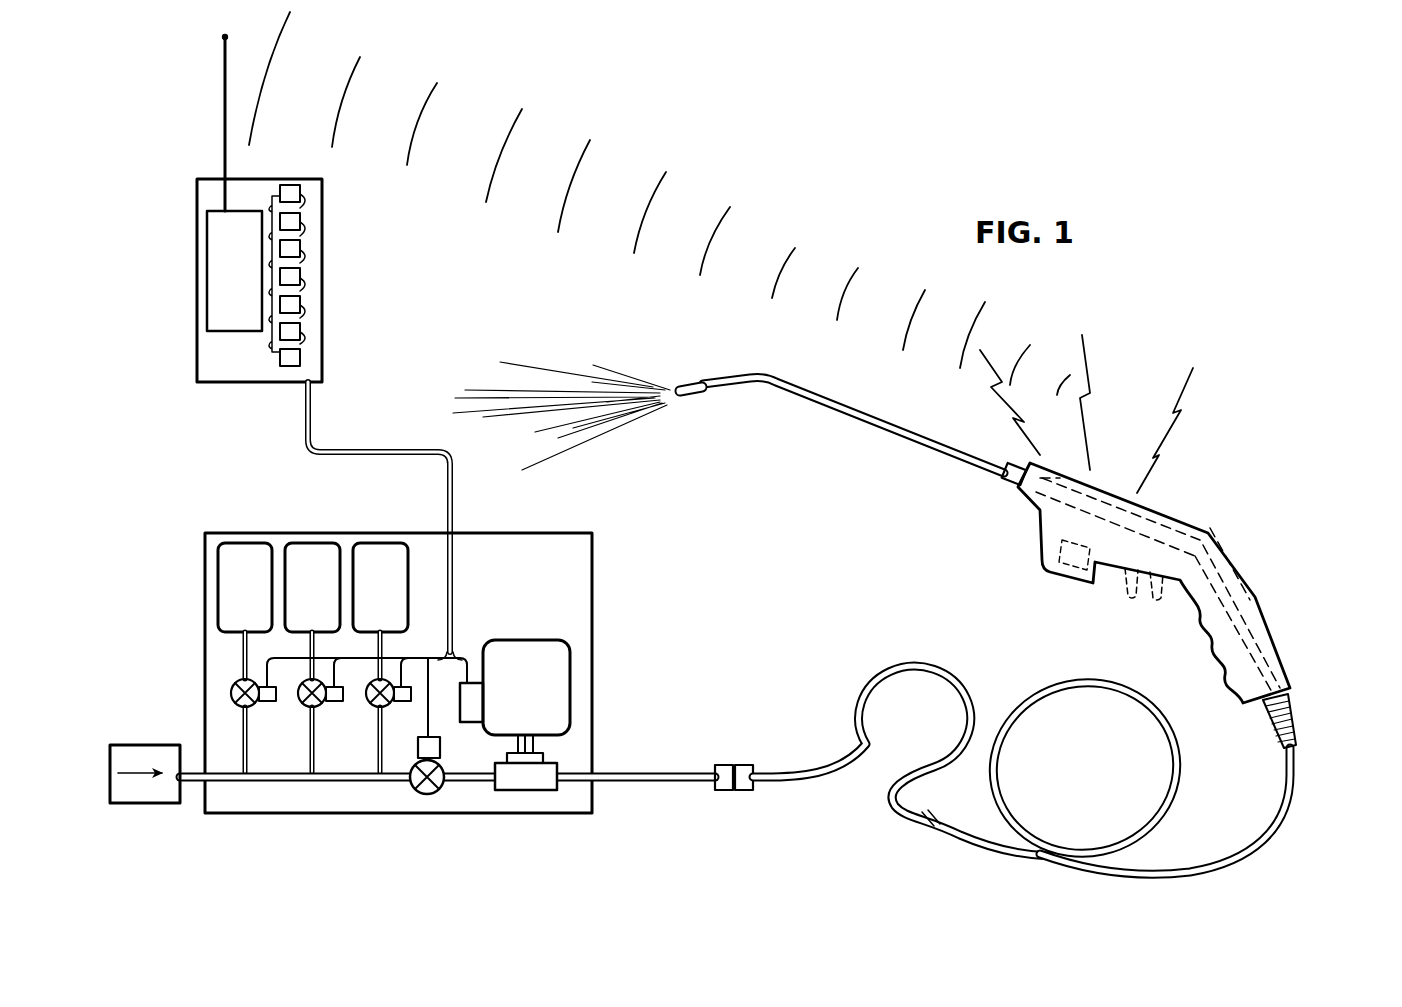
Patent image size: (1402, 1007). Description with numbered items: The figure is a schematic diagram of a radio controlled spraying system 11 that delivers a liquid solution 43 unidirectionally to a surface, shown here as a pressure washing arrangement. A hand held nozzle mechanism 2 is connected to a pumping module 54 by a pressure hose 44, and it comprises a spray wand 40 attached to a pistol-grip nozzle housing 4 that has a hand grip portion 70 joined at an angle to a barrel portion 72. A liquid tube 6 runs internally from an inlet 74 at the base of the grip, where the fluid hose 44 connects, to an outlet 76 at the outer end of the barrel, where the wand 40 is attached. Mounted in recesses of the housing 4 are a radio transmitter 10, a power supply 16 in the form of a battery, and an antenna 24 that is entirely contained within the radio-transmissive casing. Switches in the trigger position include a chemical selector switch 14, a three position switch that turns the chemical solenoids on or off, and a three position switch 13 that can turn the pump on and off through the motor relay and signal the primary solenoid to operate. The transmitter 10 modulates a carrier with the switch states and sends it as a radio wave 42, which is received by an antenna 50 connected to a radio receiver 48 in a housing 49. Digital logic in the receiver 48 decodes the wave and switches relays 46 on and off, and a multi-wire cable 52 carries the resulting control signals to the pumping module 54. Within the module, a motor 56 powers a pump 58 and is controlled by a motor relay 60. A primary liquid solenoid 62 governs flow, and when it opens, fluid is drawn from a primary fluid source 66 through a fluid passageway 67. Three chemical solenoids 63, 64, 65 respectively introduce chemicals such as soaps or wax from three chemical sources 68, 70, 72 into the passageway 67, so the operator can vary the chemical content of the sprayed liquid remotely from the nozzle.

The hand held nozzle mechanism 2 is at (985, 535).
The nozzle housing 4 is at (1185, 513).
The liquid tube 6 is at (1263, 623).
The radio transmitter 10 is at (1150, 560).
The radio controlled spraying system 11 is at (1208, 440).
The three position switch 13 is at (1153, 596).
The chemical selector switch 14 is at (1128, 594).
The power supply 16 is at (1063, 570).
The antenna 24 is at (1072, 478).
The spray wand 40 is at (836, 398).
The radio wave 42 is at (700, 184).
The liquid solution 43 is at (604, 439).
The pressure hose 44 is at (1273, 838).
The relays 46 is at (302, 247).
The radio receiver 48 is at (225, 287).
The housing 49 is at (197, 340).
The antenna 50 is at (225, 122).
The multi-wire cable 52 is at (312, 408).
The pumping module 54 is at (600, 571).
The motor 56 is at (548, 677).
The pump 58 is at (552, 768).
The motor relay 60 is at (472, 710).
The primary liquid solenoid 62 is at (425, 797).
The chemical solenoid 63 is at (233, 686).
The chemical solenoid 64 is at (300, 704).
The chemical solenoid 65 is at (369, 706).
The primary fluid source 66 is at (138, 804).
The fluid passageway 67 is at (285, 783).
The chemical source 68 is at (245, 543).
The chemical source 70 is at (312, 545).
The chemical source 72 is at (382, 545).
The inlet 74 is at (1284, 702).
The outlet 76 is at (1008, 478).